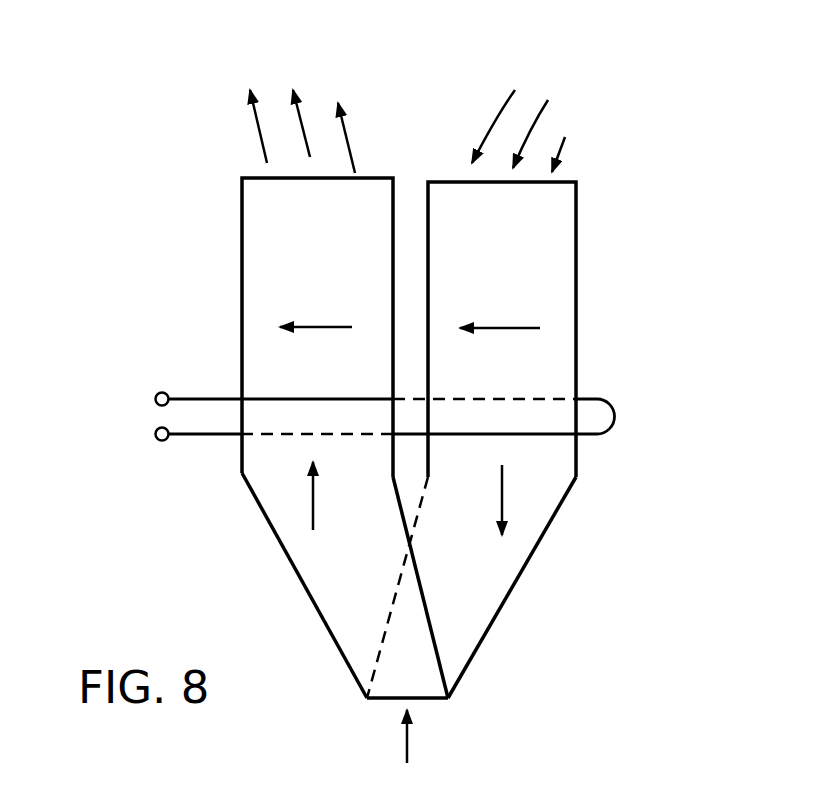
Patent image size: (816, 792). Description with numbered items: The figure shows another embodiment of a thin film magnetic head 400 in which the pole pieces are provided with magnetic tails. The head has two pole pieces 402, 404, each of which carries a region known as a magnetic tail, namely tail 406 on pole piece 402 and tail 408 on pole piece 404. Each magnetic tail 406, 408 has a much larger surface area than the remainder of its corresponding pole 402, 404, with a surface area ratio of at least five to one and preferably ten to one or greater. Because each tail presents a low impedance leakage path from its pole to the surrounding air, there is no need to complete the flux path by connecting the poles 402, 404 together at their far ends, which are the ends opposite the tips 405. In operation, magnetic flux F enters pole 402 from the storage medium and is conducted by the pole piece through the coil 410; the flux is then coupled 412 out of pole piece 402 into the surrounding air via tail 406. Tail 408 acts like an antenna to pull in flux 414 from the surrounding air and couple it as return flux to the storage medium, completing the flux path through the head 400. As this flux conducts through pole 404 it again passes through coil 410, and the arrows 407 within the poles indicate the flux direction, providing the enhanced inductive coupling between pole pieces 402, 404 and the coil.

The thin film magnetic head 400 is at (395, 393).
The pole piece 402 is at (262, 515).
The pole piece 404 is at (520, 573).
The tips 405 is at (448, 700).
The magnetic tail 406 is at (242, 218).
The flow direction arrows 407 is at (322, 315).
The magnetic tail 408 is at (577, 228).
The coil 410 is at (222, 445).
The coupled flux 412 is at (302, 80).
The flux 414 is at (528, 107).